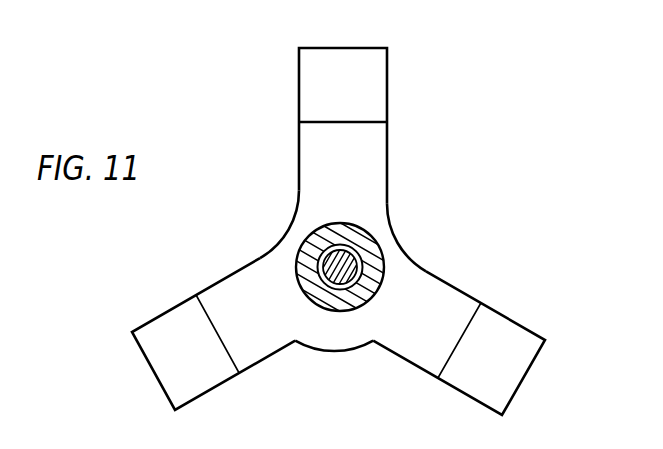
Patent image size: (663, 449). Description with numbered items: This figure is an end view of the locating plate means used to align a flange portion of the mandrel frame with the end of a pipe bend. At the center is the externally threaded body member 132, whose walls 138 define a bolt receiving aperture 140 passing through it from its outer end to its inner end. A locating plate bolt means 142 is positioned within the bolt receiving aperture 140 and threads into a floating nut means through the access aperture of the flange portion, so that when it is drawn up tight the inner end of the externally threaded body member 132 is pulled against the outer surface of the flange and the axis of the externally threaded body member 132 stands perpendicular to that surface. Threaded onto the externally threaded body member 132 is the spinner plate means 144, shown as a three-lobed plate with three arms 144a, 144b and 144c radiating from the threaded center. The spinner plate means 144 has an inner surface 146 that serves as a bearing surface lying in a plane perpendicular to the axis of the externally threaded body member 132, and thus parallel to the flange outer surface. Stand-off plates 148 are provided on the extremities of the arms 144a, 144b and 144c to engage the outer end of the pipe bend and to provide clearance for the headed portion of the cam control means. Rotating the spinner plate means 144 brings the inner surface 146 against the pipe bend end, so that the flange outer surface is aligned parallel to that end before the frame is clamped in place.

The externally threaded body member 132 is at (352, 237).
The walls 138 is at (346, 287).
The bolt receiving aperture 140 is at (310, 251).
The locating plate bolt means 142 is at (352, 258).
The spinner plate means 144 is at (387, 117).
The arm 144a is at (315, 45).
The arm 144b is at (508, 405).
The arm 144c is at (163, 397).
The inner surface 146 is at (363, 168).
The stand-off plates 148 is at (373, 75).